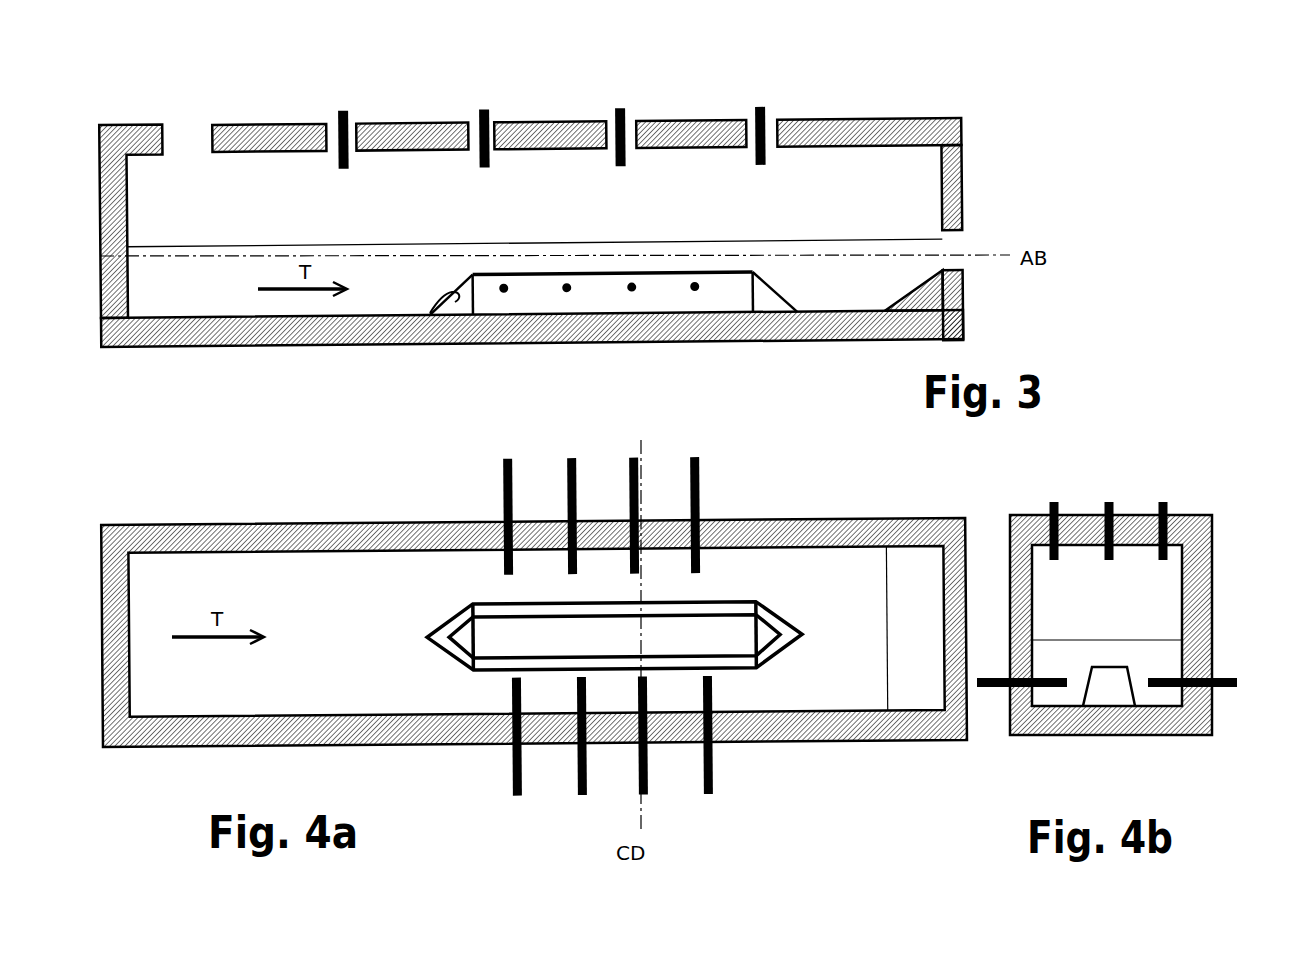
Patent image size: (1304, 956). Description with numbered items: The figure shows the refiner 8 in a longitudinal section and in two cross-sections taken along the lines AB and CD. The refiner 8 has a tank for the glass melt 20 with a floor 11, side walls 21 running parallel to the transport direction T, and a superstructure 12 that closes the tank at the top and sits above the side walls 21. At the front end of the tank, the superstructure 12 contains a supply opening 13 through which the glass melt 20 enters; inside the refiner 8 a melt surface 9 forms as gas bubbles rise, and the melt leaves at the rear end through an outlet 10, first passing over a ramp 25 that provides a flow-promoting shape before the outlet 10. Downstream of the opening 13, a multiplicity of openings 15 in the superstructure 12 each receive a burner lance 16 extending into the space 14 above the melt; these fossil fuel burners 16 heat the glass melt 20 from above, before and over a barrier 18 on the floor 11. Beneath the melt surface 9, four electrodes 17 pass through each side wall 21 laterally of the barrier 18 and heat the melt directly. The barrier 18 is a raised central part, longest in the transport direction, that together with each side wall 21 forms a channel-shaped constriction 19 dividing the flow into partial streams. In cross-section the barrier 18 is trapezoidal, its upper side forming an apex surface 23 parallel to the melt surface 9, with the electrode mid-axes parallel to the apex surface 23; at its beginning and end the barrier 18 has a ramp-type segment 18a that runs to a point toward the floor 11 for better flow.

In FIG. 3, the refiner 8 is at (966, 122).
In FIG. 3, the melt surface 9 is at (247, 245).
In FIG. 4B, the melt surface 9 is at (1157, 640).
In FIG. 3, the outlet 10 is at (958, 265).
In FIG. 3, the floor 11 is at (847, 325).
In FIG. 4B, the floor 11 is at (1163, 717).
In FIG. 3, the superstructure 12 is at (897, 116).
In FIG. 3, the supply opening 13 is at (185, 132).
In FIG. 3, the space 14 is at (897, 183).
In FIG. 4B, the space 14 is at (1075, 573).
In FIG. 3, the openings 15 is at (470, 124).
In FIG. 3, the burner lance 16 is at (345, 112).
In FIG. 4B, the burner lance 16 is at (1108, 502).
In FIG. 3, the electrodes 17 is at (506, 292).
In FIG. 4A, the electrodes 17 is at (510, 460).
In FIG. 4B, the electrodes 17 is at (993, 677).
In FIG. 3, the barrier 18 is at (473, 279).
In FIG. 4A, the barrier 18 is at (552, 645).
In FIG. 4B, the barrier 18 is at (1107, 697).
In FIG. 3, the ramp-type segment 18a is at (430, 313).
In FIG. 4A, the ramp-type segment 18a is at (813, 473).
In FIG. 4A, the channel-shaped constriction 19 is at (665, 575).
In FIG. 4B, the channel-shaped constriction 19 is at (1045, 699).
In FIG. 3, the glass melt 20 is at (187, 292).
In FIG. 4B, the glass melt 20 is at (1160, 660).
In FIG. 4A, the side walls 21 is at (873, 530).
In FIG. 3, the apex surface 23 is at (596, 273).
In FIG. 4A, the apex surface 23 is at (728, 642).
In FIG. 4B, the apex surface 23 is at (1110, 667).
In FIG. 3, the ramp 25 is at (937, 302).
In FIG. 4A, the ramp 25 is at (903, 703).